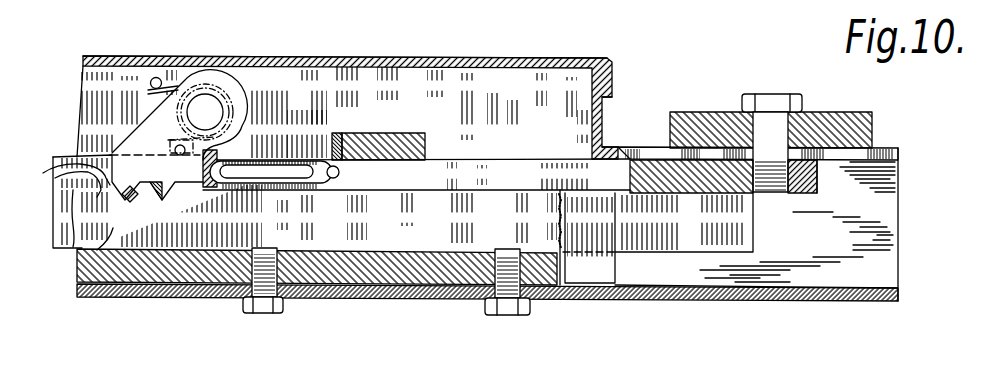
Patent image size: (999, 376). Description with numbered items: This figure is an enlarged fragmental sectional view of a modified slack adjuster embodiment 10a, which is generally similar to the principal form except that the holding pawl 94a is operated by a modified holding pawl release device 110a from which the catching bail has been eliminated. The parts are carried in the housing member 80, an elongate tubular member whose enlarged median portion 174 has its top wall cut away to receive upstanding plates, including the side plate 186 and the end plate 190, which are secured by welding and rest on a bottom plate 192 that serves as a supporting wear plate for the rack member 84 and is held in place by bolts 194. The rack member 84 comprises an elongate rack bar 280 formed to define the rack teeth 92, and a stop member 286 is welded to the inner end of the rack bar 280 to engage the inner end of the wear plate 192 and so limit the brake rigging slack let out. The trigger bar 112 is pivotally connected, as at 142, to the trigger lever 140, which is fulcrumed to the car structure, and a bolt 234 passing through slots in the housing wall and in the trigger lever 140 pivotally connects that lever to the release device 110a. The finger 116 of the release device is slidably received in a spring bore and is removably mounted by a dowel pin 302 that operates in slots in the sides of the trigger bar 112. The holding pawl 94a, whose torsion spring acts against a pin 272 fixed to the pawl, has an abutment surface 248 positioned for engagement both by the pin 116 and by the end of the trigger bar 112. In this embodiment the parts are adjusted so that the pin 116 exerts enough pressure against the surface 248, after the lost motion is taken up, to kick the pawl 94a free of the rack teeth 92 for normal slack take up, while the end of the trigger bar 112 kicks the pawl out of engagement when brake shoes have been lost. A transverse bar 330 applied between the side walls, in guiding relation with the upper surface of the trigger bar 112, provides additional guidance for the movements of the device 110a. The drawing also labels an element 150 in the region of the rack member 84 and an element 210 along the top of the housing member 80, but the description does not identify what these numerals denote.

The embodiment 10a is at (543, 56).
The housing member 80 is at (653, 124).
The rack member 84 is at (88, 217).
The rack teeth 92 is at (65, 174).
The holding pawl 94a is at (143, 127).
The holding pawl release device 110a is at (588, 172).
The trigger bar 112 is at (300, 188).
The finger 116 is at (270, 172).
The trigger lever 140 is at (833, 111).
The pivotal connection 142 is at (754, 134).
The slide 150 is at (742, 228).
The enlarged median portion 174 is at (618, 59).
The side plate 186 is at (372, 83).
The end plate 190 is at (604, 103).
The bottom plate 192 is at (373, 254).
The bolts 194 is at (285, 304).
The cover plate 210 is at (277, 58).
The bolt 234 is at (768, 98).
The abutment surface 248 is at (208, 167).
The pin 272 is at (159, 78).
The rack bar 280 is at (100, 247).
The stop member 286 is at (608, 273).
The dowel pin 302 is at (341, 133).
The transverse bar 330 is at (384, 140).